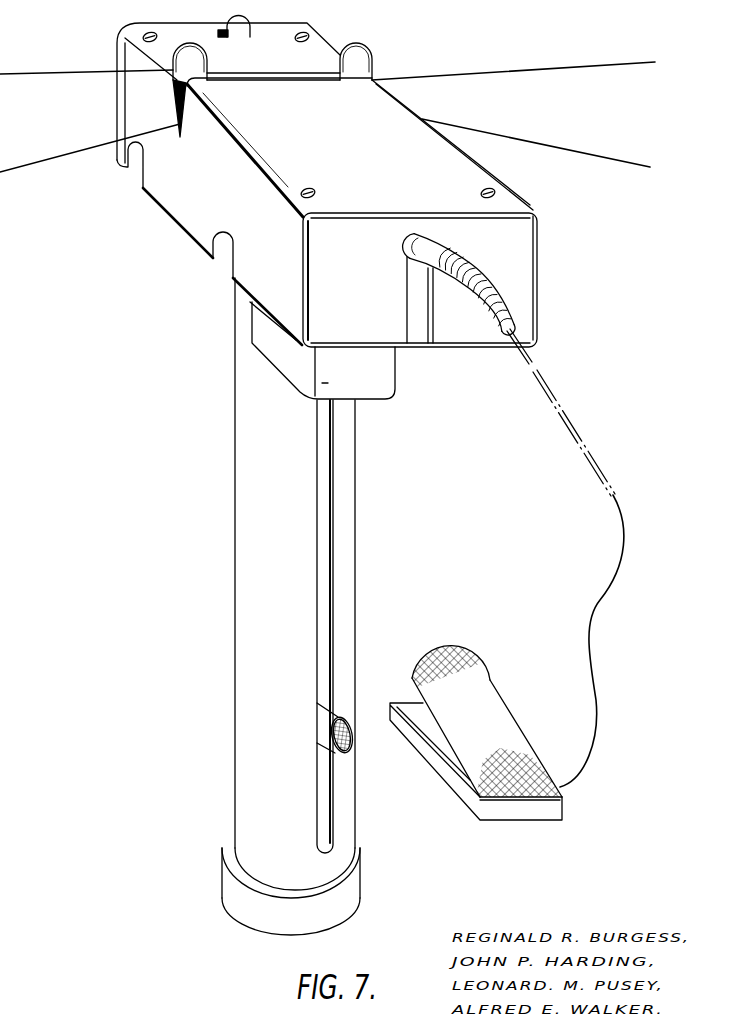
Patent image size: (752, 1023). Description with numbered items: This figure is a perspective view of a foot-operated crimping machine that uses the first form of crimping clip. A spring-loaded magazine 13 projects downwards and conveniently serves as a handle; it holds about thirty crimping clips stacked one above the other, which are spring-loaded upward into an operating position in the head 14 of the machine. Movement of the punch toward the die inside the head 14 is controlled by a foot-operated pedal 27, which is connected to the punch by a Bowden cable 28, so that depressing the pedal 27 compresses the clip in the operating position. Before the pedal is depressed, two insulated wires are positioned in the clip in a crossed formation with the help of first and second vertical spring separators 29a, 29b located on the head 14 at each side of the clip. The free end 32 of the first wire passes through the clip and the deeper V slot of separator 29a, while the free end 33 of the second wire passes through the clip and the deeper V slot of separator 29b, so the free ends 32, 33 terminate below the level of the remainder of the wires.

The spring-loaded magazine 13 is at (235, 545).
The head 14 is at (177, 198).
The foot-operated pedal 27 is at (477, 767).
The Bowden cable 28 is at (560, 418).
The first vertical spring separator 29a is at (360, 63).
The second vertical spring separator 29b is at (195, 60).
The free end of the first wire 32 is at (540, 143).
The free end of the second wire 33 is at (77, 153).